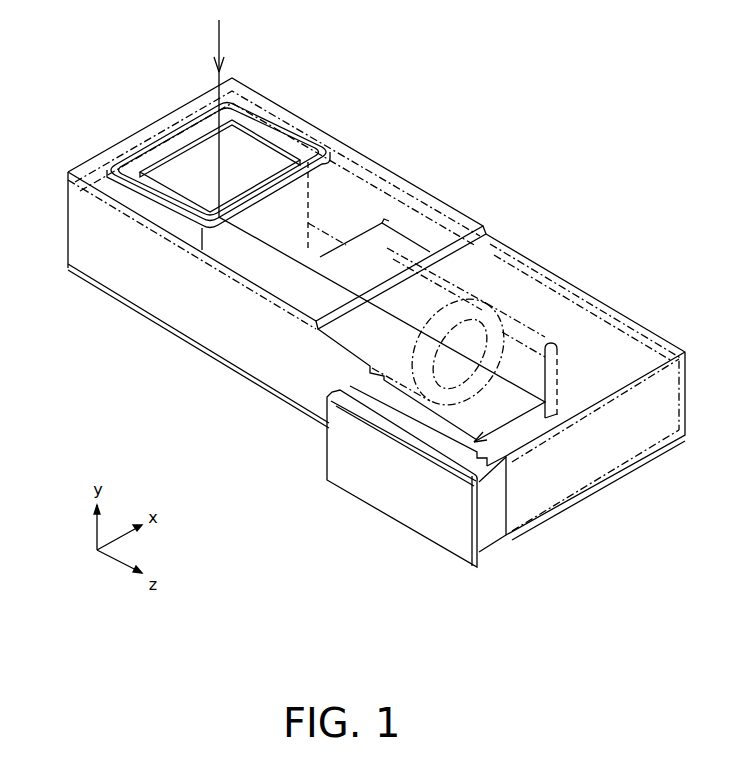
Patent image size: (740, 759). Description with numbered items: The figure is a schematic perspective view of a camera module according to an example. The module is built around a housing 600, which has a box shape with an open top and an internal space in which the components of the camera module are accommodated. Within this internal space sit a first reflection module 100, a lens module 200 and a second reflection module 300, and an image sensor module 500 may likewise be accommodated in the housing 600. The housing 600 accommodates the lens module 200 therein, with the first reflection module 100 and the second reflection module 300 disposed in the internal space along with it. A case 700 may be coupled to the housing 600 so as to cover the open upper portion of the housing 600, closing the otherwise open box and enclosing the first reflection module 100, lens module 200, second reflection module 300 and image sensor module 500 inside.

The first reflection module 100 is at (244, 141).
The lens module 200 is at (401, 243).
The second reflection module 300 is at (549, 344).
The image sensor module 500 is at (491, 538).
The housing 600 is at (114, 260).
The case 700 is at (168, 294).